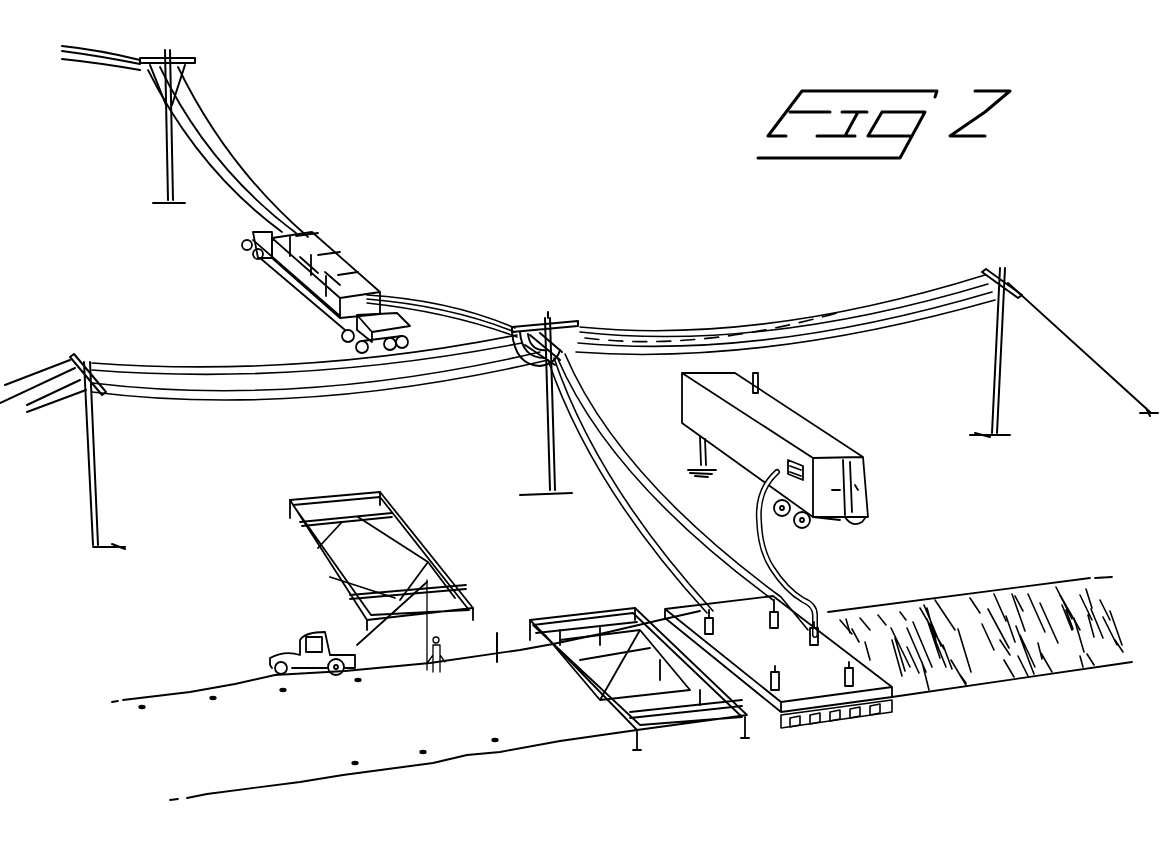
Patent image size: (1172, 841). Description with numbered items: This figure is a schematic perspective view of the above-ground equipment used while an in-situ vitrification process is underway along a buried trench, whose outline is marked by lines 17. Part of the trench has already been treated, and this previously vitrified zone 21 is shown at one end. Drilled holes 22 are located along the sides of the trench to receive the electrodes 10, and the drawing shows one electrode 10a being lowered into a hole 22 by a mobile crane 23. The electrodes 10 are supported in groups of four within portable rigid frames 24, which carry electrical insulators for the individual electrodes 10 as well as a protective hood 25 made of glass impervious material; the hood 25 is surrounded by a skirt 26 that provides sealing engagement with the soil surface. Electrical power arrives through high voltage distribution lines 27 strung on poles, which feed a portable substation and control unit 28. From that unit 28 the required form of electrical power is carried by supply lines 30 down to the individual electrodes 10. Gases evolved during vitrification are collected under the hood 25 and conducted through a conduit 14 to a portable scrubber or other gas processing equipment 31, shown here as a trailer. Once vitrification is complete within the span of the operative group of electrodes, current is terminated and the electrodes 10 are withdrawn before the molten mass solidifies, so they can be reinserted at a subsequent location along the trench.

The electrode 10 is at (495, 660).
The electrode being lowered 10a is at (426, 669).
The conduit 14 is at (786, 572).
The lines outlining burial trench 17 is at (512, 753).
The previously vitrified zone 21 is at (907, 640).
The drilled holes 22 is at (255, 760).
The mobile crane 23 is at (316, 629).
The portable rigid frame 24 is at (598, 608).
The protective hood 25 is at (822, 673).
The skirt 26 is at (826, 722).
The high voltage distribution lines 27 is at (232, 152).
The portable substation and control unit 28 is at (316, 249).
The supply lines 30 is at (632, 523).
The portable scrubber or gas processing equipment 31 is at (803, 430).